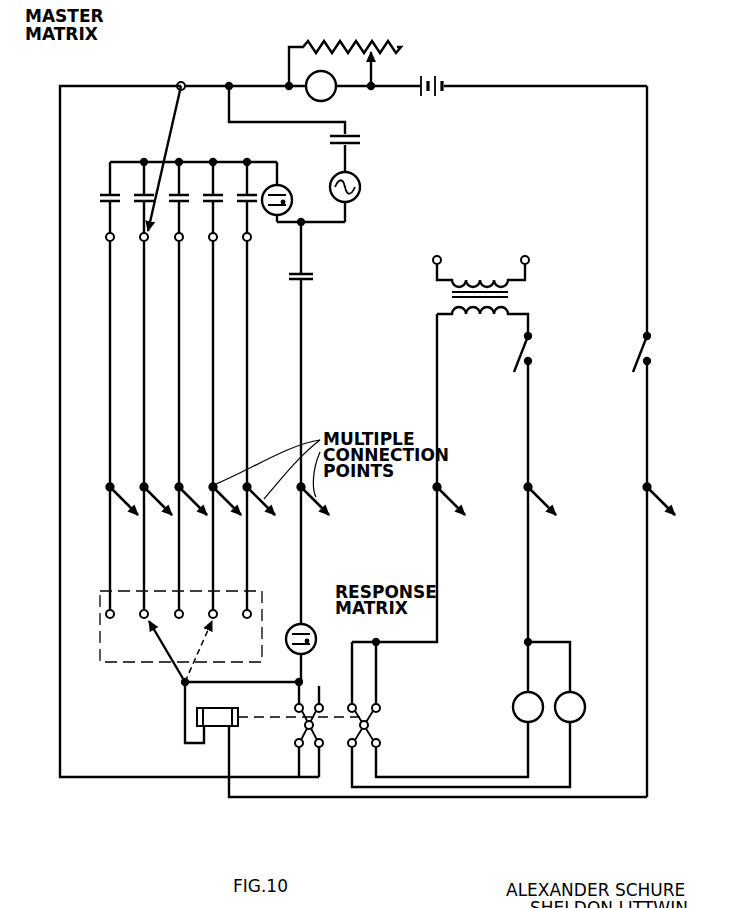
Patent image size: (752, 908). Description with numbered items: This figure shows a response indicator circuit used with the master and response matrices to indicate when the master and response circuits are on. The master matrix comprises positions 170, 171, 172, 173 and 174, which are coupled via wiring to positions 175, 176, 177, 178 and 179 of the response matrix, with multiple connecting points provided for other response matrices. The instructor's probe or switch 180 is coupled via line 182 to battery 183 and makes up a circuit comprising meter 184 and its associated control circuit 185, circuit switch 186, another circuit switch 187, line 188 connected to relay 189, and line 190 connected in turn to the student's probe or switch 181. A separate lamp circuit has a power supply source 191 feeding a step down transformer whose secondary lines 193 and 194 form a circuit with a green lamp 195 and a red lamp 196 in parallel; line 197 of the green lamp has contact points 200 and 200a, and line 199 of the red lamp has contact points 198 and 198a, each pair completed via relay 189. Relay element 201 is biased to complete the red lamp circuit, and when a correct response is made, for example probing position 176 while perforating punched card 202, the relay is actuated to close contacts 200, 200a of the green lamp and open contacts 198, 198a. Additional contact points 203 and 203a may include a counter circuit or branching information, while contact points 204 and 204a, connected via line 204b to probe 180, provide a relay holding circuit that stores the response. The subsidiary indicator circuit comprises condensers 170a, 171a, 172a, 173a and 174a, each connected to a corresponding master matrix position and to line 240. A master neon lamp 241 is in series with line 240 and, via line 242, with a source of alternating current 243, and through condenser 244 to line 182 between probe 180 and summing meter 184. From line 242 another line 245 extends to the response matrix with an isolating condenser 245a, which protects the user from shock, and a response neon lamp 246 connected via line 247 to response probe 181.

The master matrix position 170 is at (108, 241).
The master matrix position 171 is at (142, 241).
The master matrix position 172 is at (177, 421).
The master matrix position 173 is at (211, 241).
The master matrix position 174 is at (245, 241).
The condenser 170a is at (106, 198).
The condenser 171a is at (140, 202).
The condenser 172a is at (176, 206).
The condenser 173a is at (214, 206).
The condenser 174a is at (246, 204).
The response matrix position 175 is at (107, 611).
The response matrix position 176 is at (141, 612).
The response matrix position 177 is at (176, 612).
The response matrix position 178 is at (210, 612).
The response matrix position 179 is at (244, 612).
The probe or switch 180 is at (176, 112).
The probe or switch 181 is at (156, 632).
The line 182 is at (220, 68).
The battery 183 is at (444, 82).
The meter 184 is at (334, 96).
The control circuit 185 is at (348, 58).
The circuit switch 186 is at (648, 355).
The circuit switch 187 is at (530, 355).
The line 188 is at (650, 534).
The relay 189 is at (234, 708).
The line 190 is at (185, 700).
The power supply source 191 is at (521, 259).
The line 193 is at (437, 544).
The line 194 is at (531, 534).
The green lamp 195 is at (513, 714).
The red lamp 196 is at (576, 720).
The line 197 is at (455, 776).
The contact point 198 is at (378, 705).
The contact point 198a is at (379, 746).
The line 199 is at (572, 777).
The contact point 200 is at (356, 705).
The contact point 200a is at (357, 744).
The relay element 201 is at (246, 719).
The punched card 202 is at (100, 655).
The additional contact point 203 is at (322, 704).
The additional contact point 203a is at (295, 743).
The contact point 204 is at (296, 709).
The contact point 204a is at (316, 746).
The line 204b is at (60, 128).
The line 240 is at (188, 162).
The master neon lamp 241 is at (289, 186).
The line 242 is at (308, 226).
The source of alternating current 243 is at (356, 179).
The condenser 244 is at (358, 139).
The line 245 is at (304, 322).
The isolating condenser 245a is at (304, 281).
The response neon lamp 246 is at (316, 636).
The line 247 is at (250, 683).